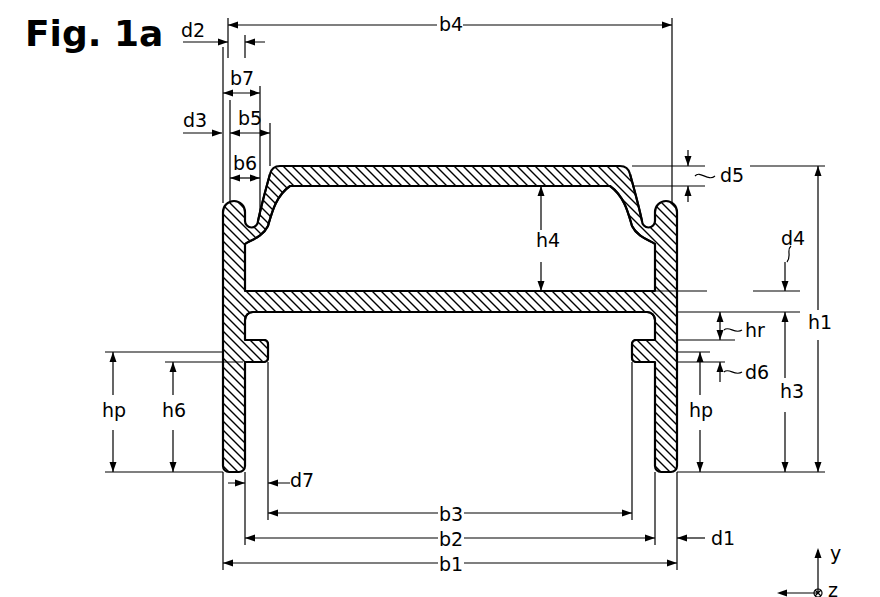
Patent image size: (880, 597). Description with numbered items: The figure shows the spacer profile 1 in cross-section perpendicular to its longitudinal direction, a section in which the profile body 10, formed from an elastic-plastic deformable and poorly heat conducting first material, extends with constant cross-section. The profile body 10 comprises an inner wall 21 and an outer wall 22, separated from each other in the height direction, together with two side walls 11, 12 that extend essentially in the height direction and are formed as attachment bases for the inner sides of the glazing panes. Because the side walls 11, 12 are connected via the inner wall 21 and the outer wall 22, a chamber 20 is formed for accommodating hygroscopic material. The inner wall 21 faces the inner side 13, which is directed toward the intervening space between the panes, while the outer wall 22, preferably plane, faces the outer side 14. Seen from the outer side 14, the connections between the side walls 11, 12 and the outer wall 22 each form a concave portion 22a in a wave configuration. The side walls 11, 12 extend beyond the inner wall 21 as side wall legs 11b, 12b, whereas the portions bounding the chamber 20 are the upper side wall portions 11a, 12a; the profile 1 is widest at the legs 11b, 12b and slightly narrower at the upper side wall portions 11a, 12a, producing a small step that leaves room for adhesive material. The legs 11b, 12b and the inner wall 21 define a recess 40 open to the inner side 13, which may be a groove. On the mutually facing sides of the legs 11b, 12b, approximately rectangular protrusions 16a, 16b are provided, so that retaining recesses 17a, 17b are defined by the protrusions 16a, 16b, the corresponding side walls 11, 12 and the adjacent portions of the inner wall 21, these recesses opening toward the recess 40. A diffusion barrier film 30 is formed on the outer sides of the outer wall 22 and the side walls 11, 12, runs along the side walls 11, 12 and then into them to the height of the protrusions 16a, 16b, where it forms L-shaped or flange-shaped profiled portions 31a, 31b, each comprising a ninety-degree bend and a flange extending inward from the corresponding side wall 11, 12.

The spacer profile 1 is at (753, 120).
The profile body 10 is at (574, 166).
The side wall 11 is at (223, 236).
The upper side wall portion 11a is at (223, 272).
The side wall leg 11b is at (226, 462).
The side wall 12 is at (677, 236).
The upper side wall portion 12a is at (677, 272).
The side wall leg 12b is at (676, 465).
The inner side 13 is at (387, 444).
The outer side 14 is at (466, 148).
The protrusion 16a is at (270, 352).
The protrusion 16b is at (630, 352).
The retaining recess 17a is at (282, 328).
The retaining recess 17b is at (620, 328).
The chamber 20 is at (353, 248).
The inner wall 21 is at (460, 290).
The outer wall 22 is at (419, 188).
The concave portion 22a is at (281, 150).
The diffusion barrier film 30 is at (364, 166).
The profiled portion of diffusion barrier film 31a is at (223, 330).
The profiled portion of diffusion barrier film 31b is at (666, 333).
The recess 40 is at (460, 406).